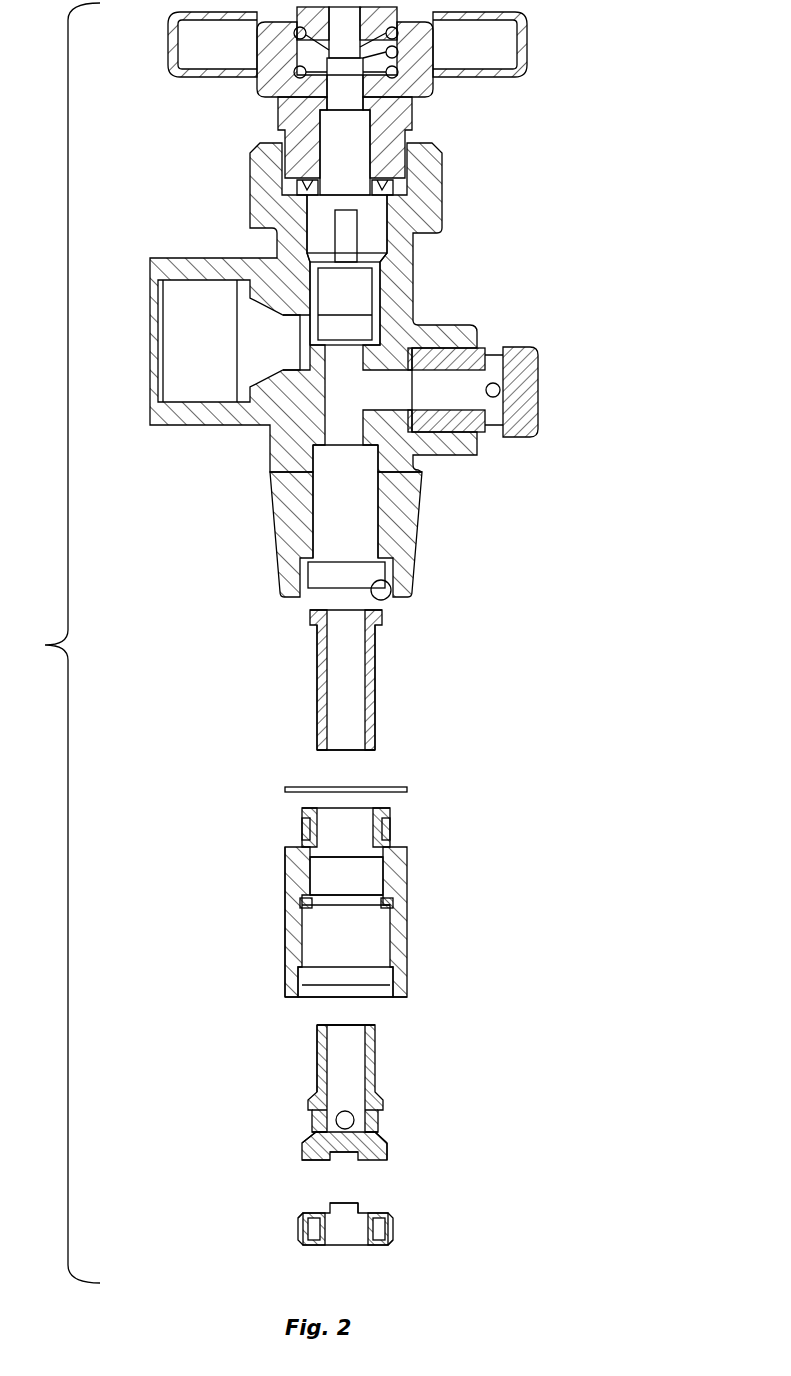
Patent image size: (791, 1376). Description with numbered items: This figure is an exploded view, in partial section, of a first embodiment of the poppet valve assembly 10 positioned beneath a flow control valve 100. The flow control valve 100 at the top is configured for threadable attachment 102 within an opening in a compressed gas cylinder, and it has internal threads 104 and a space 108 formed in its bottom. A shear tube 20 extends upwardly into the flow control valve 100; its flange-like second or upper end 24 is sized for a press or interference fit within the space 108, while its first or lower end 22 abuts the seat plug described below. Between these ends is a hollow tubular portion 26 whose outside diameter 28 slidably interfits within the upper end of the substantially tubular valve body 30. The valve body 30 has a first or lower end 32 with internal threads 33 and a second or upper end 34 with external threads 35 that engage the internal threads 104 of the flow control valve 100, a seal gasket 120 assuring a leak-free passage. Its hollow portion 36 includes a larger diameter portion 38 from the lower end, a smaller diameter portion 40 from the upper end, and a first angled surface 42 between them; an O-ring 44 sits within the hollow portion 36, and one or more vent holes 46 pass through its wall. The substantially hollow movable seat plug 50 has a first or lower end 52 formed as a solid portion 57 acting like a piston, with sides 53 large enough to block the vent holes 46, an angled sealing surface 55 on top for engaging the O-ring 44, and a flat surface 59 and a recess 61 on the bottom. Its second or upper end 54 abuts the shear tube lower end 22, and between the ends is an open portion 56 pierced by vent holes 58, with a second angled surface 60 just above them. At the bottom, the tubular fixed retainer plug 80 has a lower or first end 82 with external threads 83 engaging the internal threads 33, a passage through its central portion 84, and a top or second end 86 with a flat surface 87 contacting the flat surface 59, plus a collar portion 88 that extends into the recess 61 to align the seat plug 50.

The poppet valve assembly 10 is at (468, 896).
The shear tube 20 is at (351, 696).
The first or lower end of the shear tube 22 is at (320, 752).
The second or upper end of the shear tube 24 is at (310, 612).
The hollow tubular portion 26 is at (317, 694).
The outside diameter of the tubular portion 28 is at (376, 668).
The substantially tubular valve body 30 is at (342, 913).
The first or lower end of the valve body 32 is at (287, 984).
The internal threads 33 is at (392, 986).
The second or upper end of the valve body 34 is at (305, 806).
The external threads 35 is at (392, 826).
The hollow portion 36 is at (285, 880).
The larger diameter portion 38 is at (287, 960).
The smaller diameter portion 40 is at (358, 840).
The first angled surface 42 is at (378, 850).
The O-ring 44 is at (384, 905).
The vent holes 46 is at (290, 923).
The substantially hollow movable seat plug 50 is at (351, 1103).
The first or lower end of the seat plug 52 is at (303, 1157).
The sides of the solid portion 53 is at (303, 1146).
The second or upper end of the seat plug 54 is at (318, 1025).
The angled sealing surface 55 is at (387, 1137).
The open portion 56 is at (317, 1050).
The solid portion 57 is at (387, 1153).
The vent holes 58 is at (345, 1111).
The flat surface 59 is at (314, 1161).
The second angled surface 60 is at (358, 1060).
The recess 61 is at (354, 1158).
The tubular fixed retainer plug 80 is at (359, 1222).
The lower or first end of the retainer plug 82 is at (386, 1249).
The external threads 83 is at (393, 1233).
The central portion passage 84 is at (340, 1233).
The top or second end of the retainer plug 86 is at (300, 1212).
The flat surface 87 is at (380, 1208).
The collar portion 88 is at (368, 1203).
The flow control valve 100 is at (440, 185).
The threadable attachment 102 is at (413, 541).
The internal threads 104 is at (389, 600).
The space 108 is at (363, 505).
The seal gasket 120 is at (389, 786).